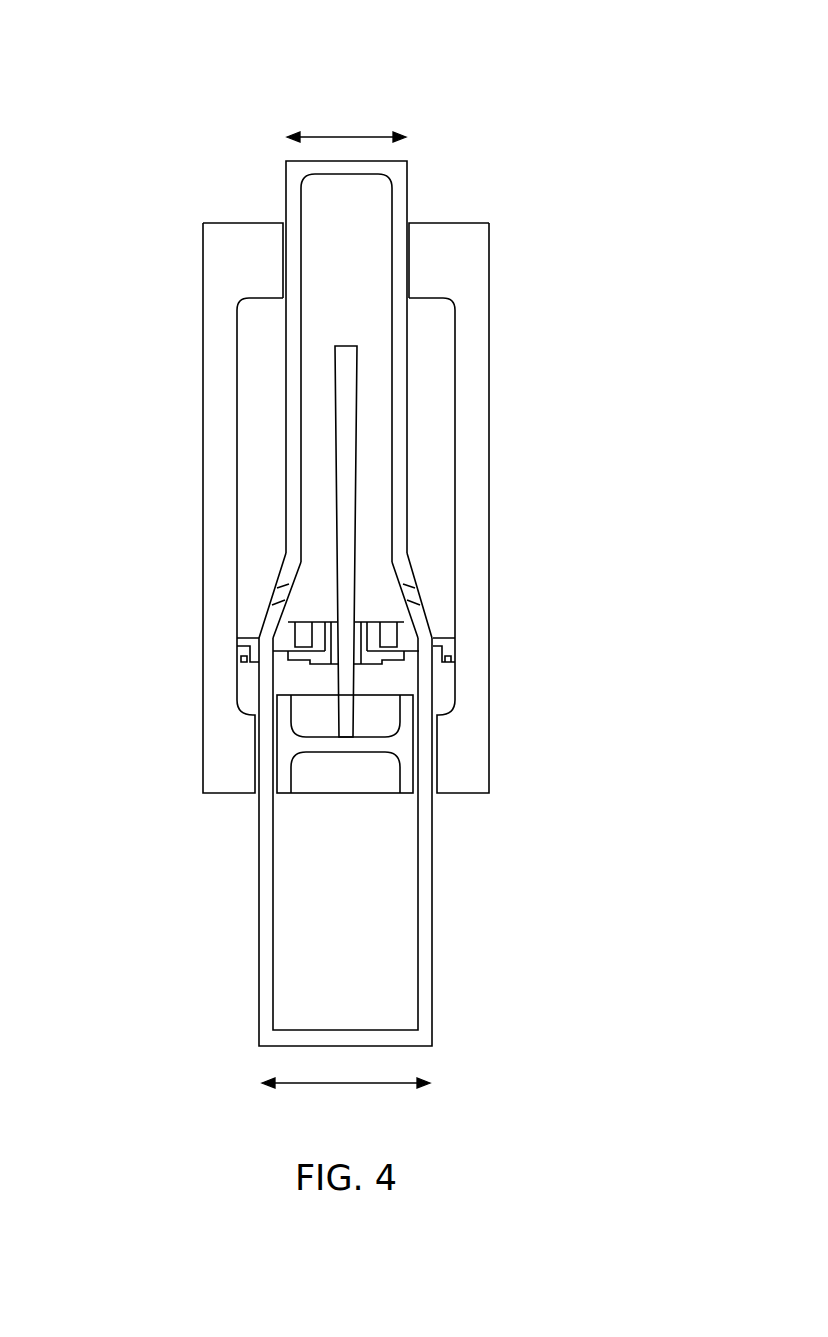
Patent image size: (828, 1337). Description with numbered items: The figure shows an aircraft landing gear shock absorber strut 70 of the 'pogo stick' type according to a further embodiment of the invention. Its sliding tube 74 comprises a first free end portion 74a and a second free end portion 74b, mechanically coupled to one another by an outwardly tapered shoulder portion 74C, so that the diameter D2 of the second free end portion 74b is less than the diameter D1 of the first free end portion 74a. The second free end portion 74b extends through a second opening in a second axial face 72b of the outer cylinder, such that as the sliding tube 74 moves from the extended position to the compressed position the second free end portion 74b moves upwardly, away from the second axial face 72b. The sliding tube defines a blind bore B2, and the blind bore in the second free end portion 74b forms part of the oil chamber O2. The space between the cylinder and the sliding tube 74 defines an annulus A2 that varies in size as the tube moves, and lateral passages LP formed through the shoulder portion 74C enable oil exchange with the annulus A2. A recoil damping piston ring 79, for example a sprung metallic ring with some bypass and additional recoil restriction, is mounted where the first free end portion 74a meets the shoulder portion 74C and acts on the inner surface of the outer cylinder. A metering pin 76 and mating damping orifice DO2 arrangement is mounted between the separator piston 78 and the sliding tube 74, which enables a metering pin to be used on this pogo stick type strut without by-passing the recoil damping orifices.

The aircraft landing gear shock absorber strut 70 is at (592, 160).
The second axial face 72b is at (408, 220).
The sliding tube 74 is at (433, 938).
The first free end portion 74a is at (417, 1048).
The second free end portion 74b is at (288, 160).
The outwardly tapered shoulder portion 74C is at (412, 567).
The metering pin 76 is at (347, 461).
The separator piston 78 is at (287, 743).
The recoil damping piston ring 79 is at (450, 658).
The annulus A2 is at (262, 426).
The blind bore B2 is at (317, 212).
The oil chamber O2 is at (323, 252).
The lateral passages LP is at (283, 590).
The damping orifice DO2 is at (337, 635).
The diameter of the second free end portion D2 is at (346, 121).
The diameter of the first free end portion D1 is at (346, 1098).